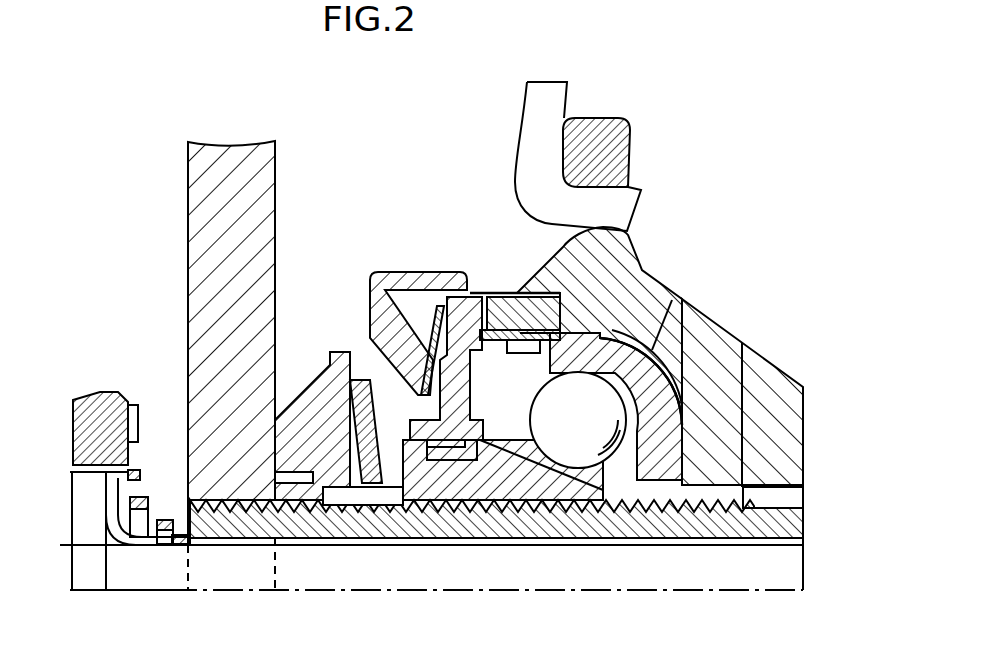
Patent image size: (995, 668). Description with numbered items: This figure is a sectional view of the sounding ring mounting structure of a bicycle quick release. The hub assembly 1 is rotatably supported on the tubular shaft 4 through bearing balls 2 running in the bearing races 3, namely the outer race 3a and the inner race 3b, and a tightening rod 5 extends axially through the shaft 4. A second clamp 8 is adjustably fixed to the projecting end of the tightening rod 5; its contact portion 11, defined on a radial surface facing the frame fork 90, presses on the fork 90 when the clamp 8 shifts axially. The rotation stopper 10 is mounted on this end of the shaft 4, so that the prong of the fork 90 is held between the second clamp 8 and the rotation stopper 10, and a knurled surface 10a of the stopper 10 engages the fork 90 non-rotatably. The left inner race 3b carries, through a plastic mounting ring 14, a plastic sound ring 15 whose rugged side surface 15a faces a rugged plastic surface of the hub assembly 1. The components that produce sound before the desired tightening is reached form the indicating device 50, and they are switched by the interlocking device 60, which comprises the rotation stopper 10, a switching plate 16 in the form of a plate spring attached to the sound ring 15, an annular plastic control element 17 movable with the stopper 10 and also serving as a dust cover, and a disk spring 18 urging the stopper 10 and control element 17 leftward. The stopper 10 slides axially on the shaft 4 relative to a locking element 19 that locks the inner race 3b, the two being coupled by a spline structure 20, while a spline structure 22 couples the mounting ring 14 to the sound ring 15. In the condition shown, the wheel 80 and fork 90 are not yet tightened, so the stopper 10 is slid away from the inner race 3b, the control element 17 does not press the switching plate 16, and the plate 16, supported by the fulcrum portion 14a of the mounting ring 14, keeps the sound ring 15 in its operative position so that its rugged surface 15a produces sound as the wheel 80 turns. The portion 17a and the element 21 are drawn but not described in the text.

The hub assembly 1 is at (648, 274).
The bearing balls 2 is at (670, 302).
The base plate 3 is at (496, 512).
The outer races 3a is at (703, 332).
The inner races 3b is at (655, 513).
The tubular shaft 4 is at (740, 400).
The tightening rod 5 is at (772, 550).
The second clamp 8 is at (90, 395).
The rotation stopper 10 is at (302, 412).
The knurled surface 10a is at (337, 447).
The contact portion 11 is at (138, 410).
The plastic mounting ring 14 is at (600, 487).
The fulcrum portion 14a is at (576, 433).
The plastic sound ring 15 is at (402, 272).
The rugged side surface 15a is at (481, 290).
The switching plate 16 is at (380, 303).
The annular control element 17 is at (383, 270).
The pin 17a is at (453, 505).
The disk spring 18 is at (352, 507).
The locking element 19 is at (376, 507).
The spline structure 20 is at (305, 489).
The foot 21 is at (497, 500).
The spline structure 22 is at (578, 420).
The indicating device 50 is at (445, 245).
The interlocking device 60 is at (327, 330).
The wheel 80 is at (522, 106).
The frame fork 90 is at (188, 168).